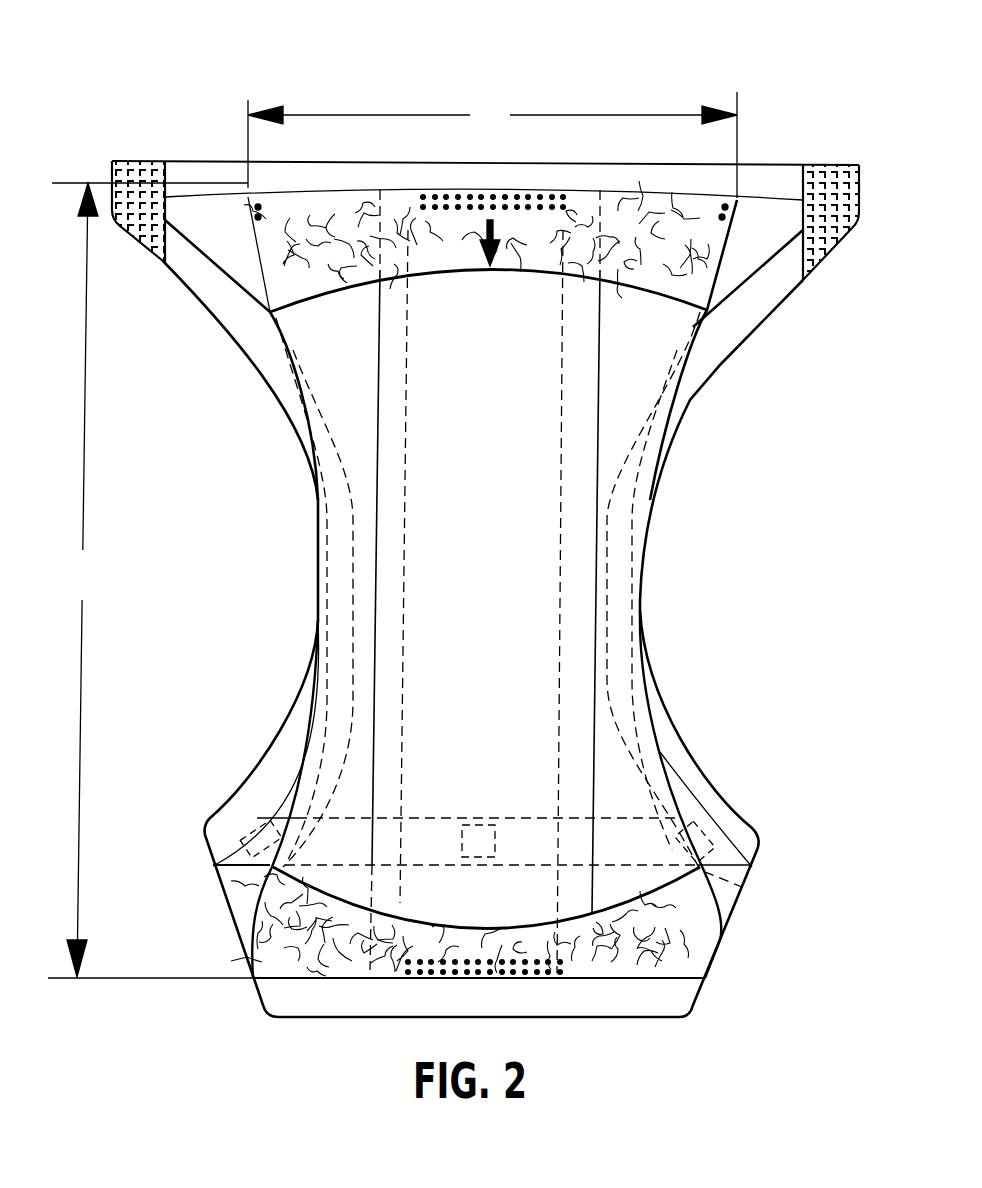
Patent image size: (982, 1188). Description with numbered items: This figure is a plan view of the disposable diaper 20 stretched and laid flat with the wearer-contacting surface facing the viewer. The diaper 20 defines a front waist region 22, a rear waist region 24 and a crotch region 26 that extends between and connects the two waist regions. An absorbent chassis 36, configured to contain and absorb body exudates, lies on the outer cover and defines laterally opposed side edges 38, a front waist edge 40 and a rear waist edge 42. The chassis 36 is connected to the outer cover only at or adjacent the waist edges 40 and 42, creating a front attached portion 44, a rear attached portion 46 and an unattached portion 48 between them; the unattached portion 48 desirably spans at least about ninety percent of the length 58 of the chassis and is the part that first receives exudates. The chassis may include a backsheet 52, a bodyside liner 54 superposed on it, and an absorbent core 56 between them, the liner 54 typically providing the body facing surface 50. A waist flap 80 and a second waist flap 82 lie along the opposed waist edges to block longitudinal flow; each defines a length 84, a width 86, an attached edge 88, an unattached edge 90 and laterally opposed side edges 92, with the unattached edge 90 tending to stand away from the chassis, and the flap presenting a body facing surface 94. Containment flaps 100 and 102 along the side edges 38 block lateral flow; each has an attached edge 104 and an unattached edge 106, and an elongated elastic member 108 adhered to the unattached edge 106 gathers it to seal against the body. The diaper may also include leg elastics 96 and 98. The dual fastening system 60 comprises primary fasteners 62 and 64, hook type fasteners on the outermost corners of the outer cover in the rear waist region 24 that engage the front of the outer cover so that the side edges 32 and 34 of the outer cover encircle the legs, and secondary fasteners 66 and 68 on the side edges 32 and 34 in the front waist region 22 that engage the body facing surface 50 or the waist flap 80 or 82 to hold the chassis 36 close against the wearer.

The disposable diaper 20 is at (140, 56).
The front waist region 22 is at (775, 981).
The rear waist region 24 is at (808, 313).
The crotch region 26 is at (745, 514).
The side edge 32 is at (303, 678).
The side edge 34 is at (657, 690).
The absorbent chassis 36 is at (450, 453).
The side edges 38 is at (673, 372).
The front waist edge 40 is at (627, 980).
The rear waist edge 42 is at (685, 195).
The front attached portion 44 is at (453, 978).
The rear attached portion 46 is at (460, 195).
The unattached portion 48 is at (527, 492).
The body facing surface 50 is at (494, 557).
The backsheet 52 is at (385, 188).
The bodyside liner 54 is at (537, 618).
The absorbent core 56 is at (560, 557).
The length 58 is at (150, 580).
The dual fastening system 60 is at (98, 135).
The primary fastener 62 is at (130, 170).
The primary fastener 64 is at (840, 172).
The secondary fastener 66 is at (193, 868).
The secondary fastener 68 is at (742, 888).
The waist flap 80 is at (700, 252).
The second waist flap 82 is at (708, 930).
The length 84 is at (486, 232).
The width 86 is at (492, 145).
The attached edge 88 is at (598, 188).
The unattached edge 90 is at (540, 275).
The side edges 92 is at (248, 216).
The body facing surface 94 is at (345, 295).
The leg elastic 96 is at (228, 820).
The leg elastic 98 is at (710, 805).
The containment flap 100 is at (325, 788).
The containment flap 102 is at (632, 768).
The attached edge 104 is at (375, 713).
The unattached edge 106 is at (310, 747).
The elongated elastic member 108 is at (327, 550).